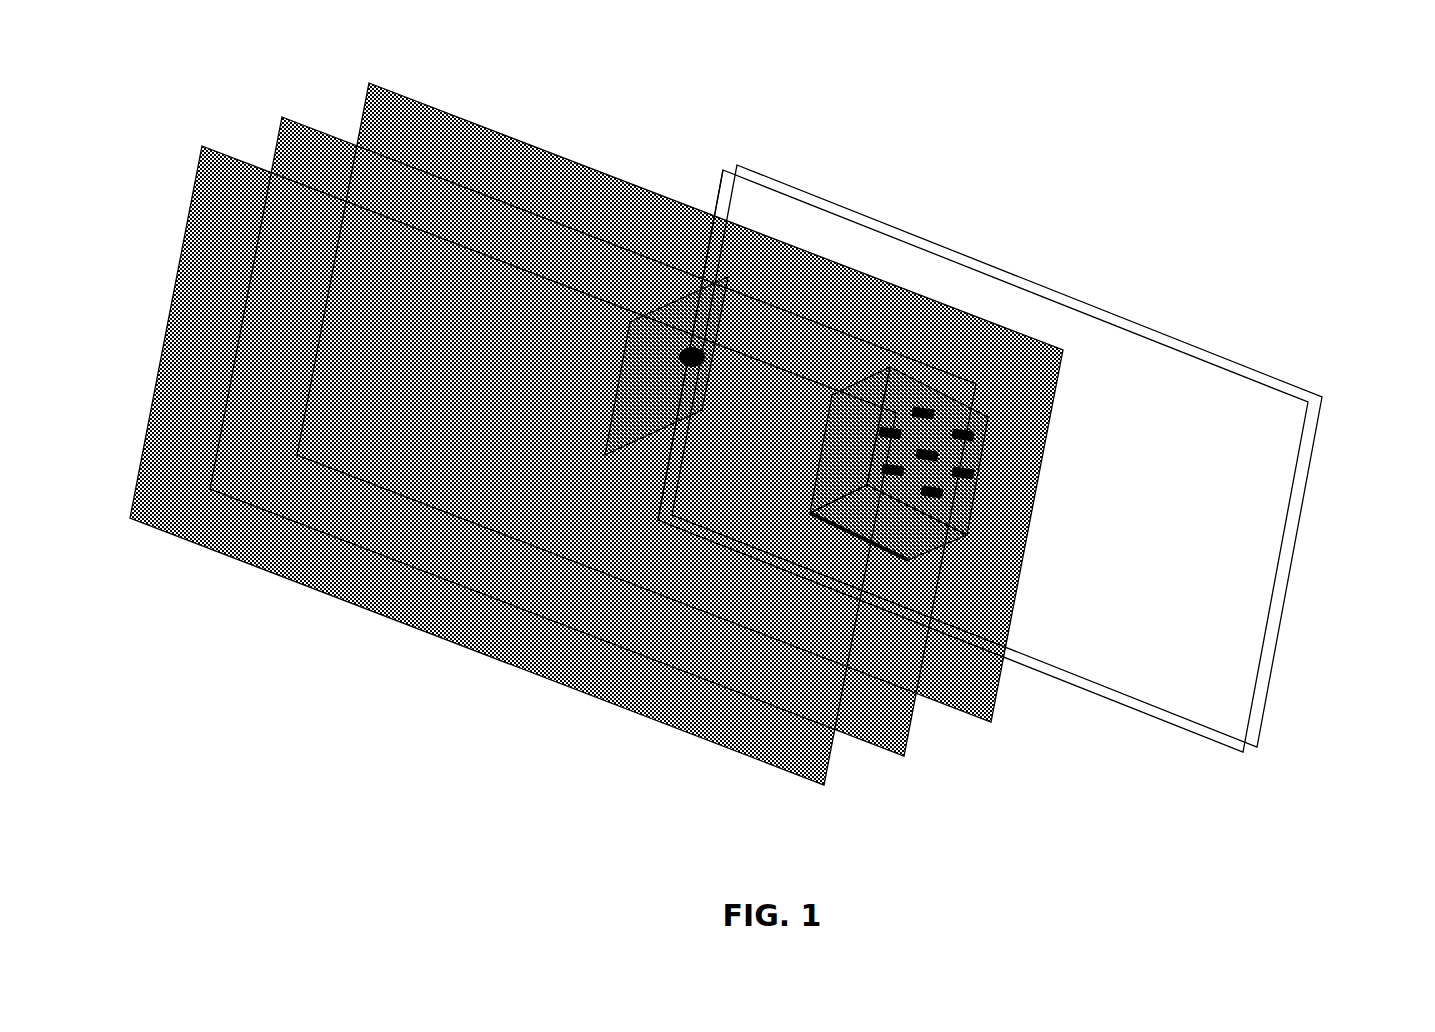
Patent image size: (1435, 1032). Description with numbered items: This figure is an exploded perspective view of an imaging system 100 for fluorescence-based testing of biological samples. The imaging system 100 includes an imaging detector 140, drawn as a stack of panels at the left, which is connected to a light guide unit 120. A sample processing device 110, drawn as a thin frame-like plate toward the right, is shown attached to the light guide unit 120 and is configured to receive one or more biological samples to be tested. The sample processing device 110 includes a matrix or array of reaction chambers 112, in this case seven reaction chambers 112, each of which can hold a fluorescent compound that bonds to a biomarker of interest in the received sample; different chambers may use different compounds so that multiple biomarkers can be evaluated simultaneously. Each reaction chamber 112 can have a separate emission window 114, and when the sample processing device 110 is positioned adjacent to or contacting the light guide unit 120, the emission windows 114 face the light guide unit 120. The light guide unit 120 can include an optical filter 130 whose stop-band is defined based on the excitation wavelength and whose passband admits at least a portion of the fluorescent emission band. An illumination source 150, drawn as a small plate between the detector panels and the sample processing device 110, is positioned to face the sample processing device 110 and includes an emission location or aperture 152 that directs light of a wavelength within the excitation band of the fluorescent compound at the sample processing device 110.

The imaging system 100 is at (1150, 102).
The sample processing device 110 is at (1150, 327).
The reaction chambers 112 is at (975, 482).
The emission window 114 is at (673, 470).
The light guide unit 120 is at (908, 378).
The optical filter 130 is at (908, 562).
The imaging detector 140 is at (335, 103).
The illumination source 150 is at (650, 367).
The emission location or aperture 152 is at (687, 350).